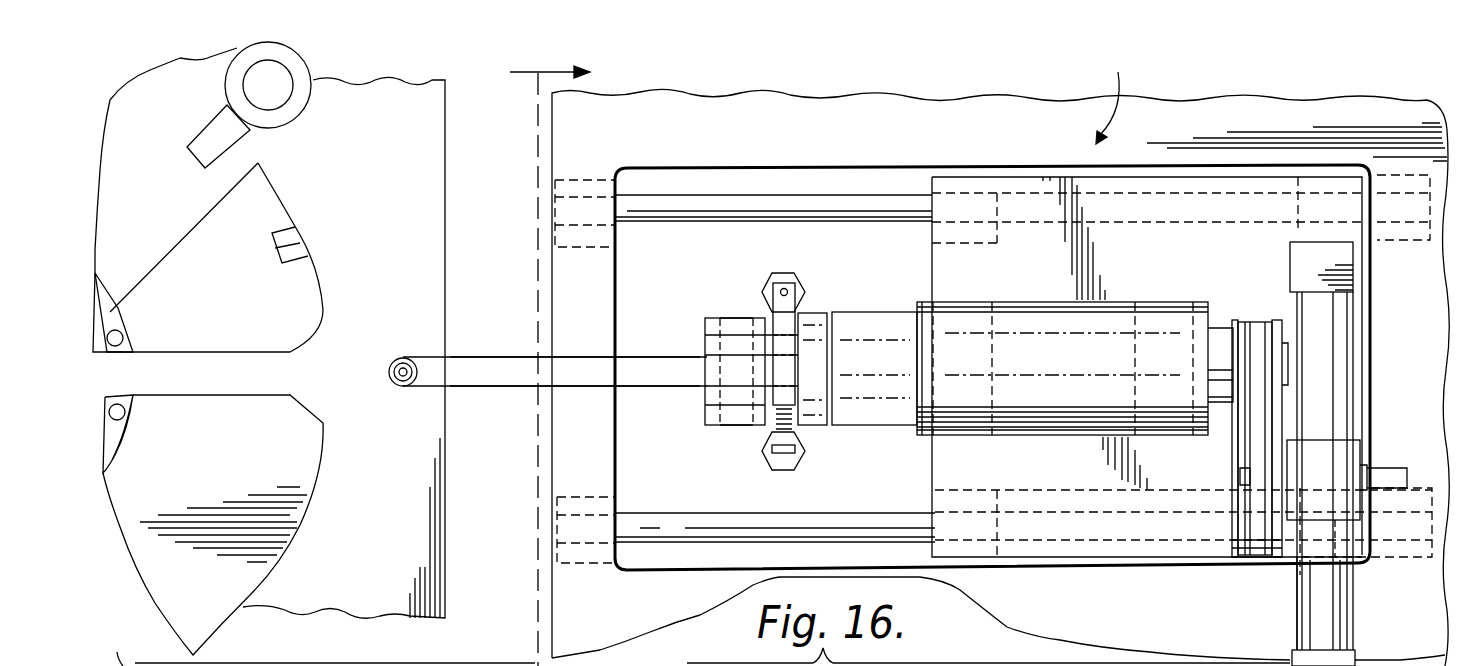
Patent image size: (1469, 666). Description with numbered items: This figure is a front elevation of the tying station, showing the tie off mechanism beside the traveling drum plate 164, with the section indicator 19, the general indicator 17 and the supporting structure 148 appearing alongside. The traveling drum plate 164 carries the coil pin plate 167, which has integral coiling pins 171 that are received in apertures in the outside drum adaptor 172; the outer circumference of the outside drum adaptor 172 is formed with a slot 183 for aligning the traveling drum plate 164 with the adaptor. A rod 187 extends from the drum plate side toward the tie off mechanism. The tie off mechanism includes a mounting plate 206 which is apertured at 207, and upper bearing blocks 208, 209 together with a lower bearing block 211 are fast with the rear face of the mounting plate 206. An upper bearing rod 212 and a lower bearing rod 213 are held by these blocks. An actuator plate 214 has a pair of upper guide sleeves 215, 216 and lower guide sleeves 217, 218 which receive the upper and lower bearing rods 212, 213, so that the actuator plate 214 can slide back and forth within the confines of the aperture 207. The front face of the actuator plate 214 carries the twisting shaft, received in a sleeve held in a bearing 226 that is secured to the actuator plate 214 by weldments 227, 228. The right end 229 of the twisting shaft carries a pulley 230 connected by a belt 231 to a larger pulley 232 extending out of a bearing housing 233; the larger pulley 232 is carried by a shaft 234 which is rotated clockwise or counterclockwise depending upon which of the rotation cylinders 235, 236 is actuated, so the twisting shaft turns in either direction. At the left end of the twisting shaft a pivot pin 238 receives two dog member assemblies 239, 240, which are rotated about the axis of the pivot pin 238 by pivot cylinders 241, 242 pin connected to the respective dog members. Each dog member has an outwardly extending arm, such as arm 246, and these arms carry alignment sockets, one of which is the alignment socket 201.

The positioning apparatus 17 is at (1102, 100).
The section line 19 is at (534, 360).
The support plate 148 is at (437, 592).
The traveling drum plate 164 is at (192, 215).
The coil pin plate 167 is at (112, 453).
The coiling pins 171 is at (123, 335).
The outside drum adaptor 172 is at (290, 525).
The slot 183 is at (295, 243).
The connecting rod 187 is at (300, 373).
The alignment socket 201 is at (403, 387).
The mounting plate 206 is at (903, 80).
The aperture 207 is at (806, 170).
The upper bearing block 208 is at (578, 178).
The upper bearing block 209 is at (1399, 243).
The lower bearing block 211 is at (1399, 562).
The upper bearing rod 212 is at (730, 220).
The lower bearing rod 213 is at (687, 495).
The actuator plate 214 is at (935, 478).
The upper guide sleeve 215 is at (941, 250).
The upper guide sleeve 216 is at (1297, 234).
The lower guide sleeve 217 is at (1000, 497).
The lower guide sleeve 218 is at (1320, 525).
The bearing 226 is at (1058, 432).
The weldment 227 is at (985, 300).
The weldment 228 is at (1165, 280).
The right end of shaft 229 is at (1222, 430).
The pulley 230 is at (1235, 315).
The belt 231 is at (1280, 297).
The larger pulley 232 is at (1232, 552).
The bearing housing 233 is at (1355, 450).
The shaft 234 is at (1385, 467).
The rotation cylinder 235 is at (1350, 372).
The rotation cylinder 236 is at (1343, 640).
The pivot pin 238 is at (735, 318).
The dog member assembly 239 is at (707, 346).
The dog member assembly 240 is at (712, 407).
The pivot cylinder 241 is at (797, 278).
The pivot cylinder 242 is at (806, 450).
The arm 246 is at (523, 383).